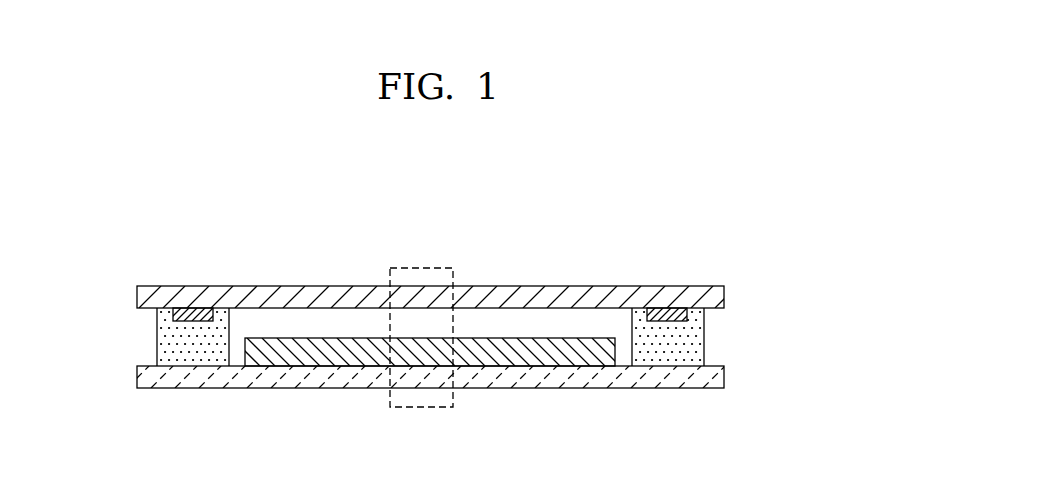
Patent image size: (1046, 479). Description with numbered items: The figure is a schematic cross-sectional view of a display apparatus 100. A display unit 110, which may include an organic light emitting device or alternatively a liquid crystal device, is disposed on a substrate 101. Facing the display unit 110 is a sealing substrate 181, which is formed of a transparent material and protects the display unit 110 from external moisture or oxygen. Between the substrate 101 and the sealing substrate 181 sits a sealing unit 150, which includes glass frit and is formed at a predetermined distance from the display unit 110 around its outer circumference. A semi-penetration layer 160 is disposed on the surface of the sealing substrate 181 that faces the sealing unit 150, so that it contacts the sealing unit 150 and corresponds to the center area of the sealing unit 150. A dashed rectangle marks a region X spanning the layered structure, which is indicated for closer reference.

The display apparatus 100 is at (682, 243).
The substrate 101 is at (716, 378).
The display unit 110 is at (485, 350).
The sealing unit 150 is at (165, 345).
The semi-penetration layer 160 is at (175, 314).
The sealing substrate 181 is at (717, 297).
The region X is at (423, 265).